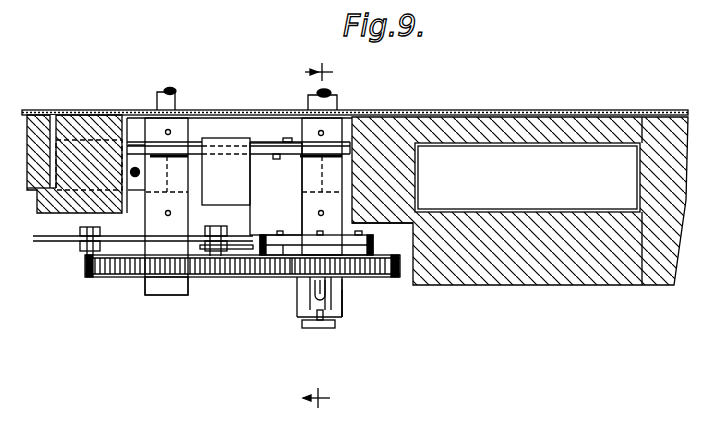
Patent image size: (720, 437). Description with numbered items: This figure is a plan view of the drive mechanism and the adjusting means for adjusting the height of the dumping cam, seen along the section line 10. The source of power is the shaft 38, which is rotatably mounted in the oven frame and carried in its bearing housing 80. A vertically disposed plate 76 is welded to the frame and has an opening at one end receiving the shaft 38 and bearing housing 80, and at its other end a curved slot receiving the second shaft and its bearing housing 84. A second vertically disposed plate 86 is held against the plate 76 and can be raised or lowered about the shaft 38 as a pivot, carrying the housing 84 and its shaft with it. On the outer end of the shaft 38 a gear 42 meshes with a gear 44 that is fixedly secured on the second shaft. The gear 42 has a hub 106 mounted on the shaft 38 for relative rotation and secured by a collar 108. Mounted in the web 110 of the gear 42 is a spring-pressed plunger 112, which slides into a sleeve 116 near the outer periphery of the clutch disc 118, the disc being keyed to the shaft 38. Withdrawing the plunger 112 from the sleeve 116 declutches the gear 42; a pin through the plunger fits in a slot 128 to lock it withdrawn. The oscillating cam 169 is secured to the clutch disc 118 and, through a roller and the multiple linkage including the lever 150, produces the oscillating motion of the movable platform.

The section line 10 is at (318, 240).
The sleeve 116 is at (177, 93).
The vertically disposed plate 76 is at (263, 142).
The shaft 38 is at (336, 93).
The bearing housing 80 is at (332, 171).
The vertically disposed plate 86 is at (263, 155).
The oscillating cam 169 is at (282, 236).
The bearing housing 84 is at (151, 204).
The lever 150 is at (57, 243).
The gear 44 is at (100, 280).
The clutch disc 118 is at (283, 250).
The gear 42 is at (292, 275).
The slot 128 is at (333, 285).
The hub 106 is at (342, 284).
The collar 108 is at (342, 296).
The spring-pressed plunger 112 is at (319, 324).
The web 110 is at (408, 223).